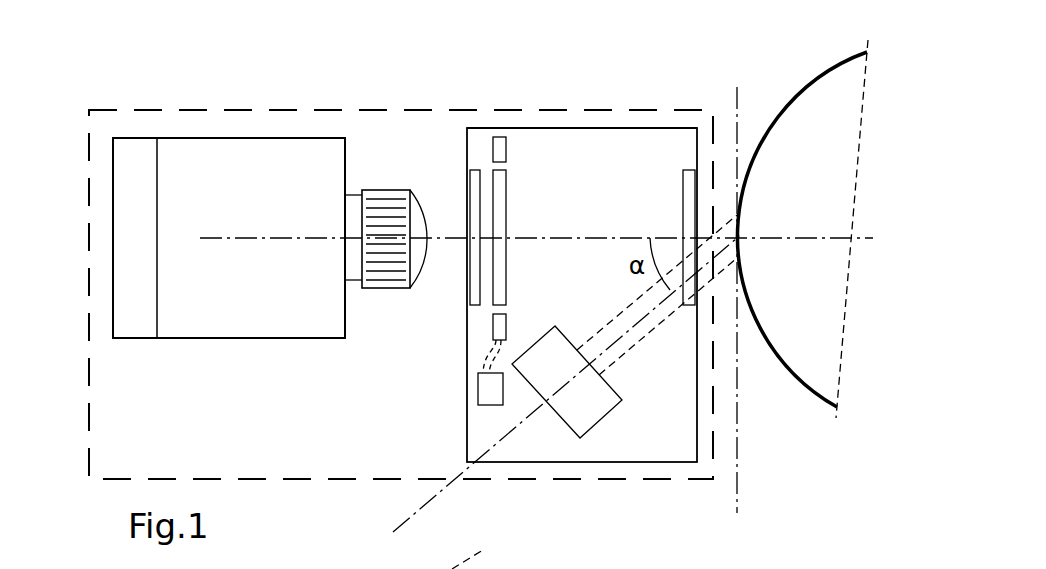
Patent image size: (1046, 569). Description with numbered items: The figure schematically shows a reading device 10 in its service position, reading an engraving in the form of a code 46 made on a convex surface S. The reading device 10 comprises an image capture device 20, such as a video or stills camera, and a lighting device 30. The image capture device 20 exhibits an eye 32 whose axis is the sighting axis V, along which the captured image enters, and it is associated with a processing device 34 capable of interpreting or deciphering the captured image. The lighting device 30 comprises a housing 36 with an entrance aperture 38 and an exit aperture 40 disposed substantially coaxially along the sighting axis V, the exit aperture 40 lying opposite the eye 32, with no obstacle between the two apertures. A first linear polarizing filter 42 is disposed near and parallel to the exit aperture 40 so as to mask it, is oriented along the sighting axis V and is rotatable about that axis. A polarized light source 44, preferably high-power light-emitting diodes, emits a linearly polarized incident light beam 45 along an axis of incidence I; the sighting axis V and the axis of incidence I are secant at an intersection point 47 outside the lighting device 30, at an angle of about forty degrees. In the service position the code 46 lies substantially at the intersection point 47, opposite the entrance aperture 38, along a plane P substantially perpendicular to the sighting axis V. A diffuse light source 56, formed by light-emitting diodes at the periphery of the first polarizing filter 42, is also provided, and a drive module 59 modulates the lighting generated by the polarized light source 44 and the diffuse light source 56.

The reading device 10 is at (360, 98).
The image capture device 20 is at (215, 145).
The processing device 34 is at (152, 145).
The eye 32 is at (428, 272).
The lighting device 30 is at (604, 122).
The housing 36 is at (672, 127).
The entrance aperture 38 is at (683, 180).
The exit aperture 40 is at (472, 180).
The first linear polarizing filter 42 is at (508, 191).
The polarized light source 44 is at (598, 410).
The linearly polarized incident light beam 45 is at (645, 323).
The code 46 is at (740, 216).
The intersection point 47 is at (741, 233).
The diffuse light source 56 is at (497, 140).
The drive module 59 is at (478, 390).
The sighting axis V is at (530, 221).
The axis of incidence I is at (560, 403).
The plane P is at (750, 300).
The convex surface S is at (795, 98).